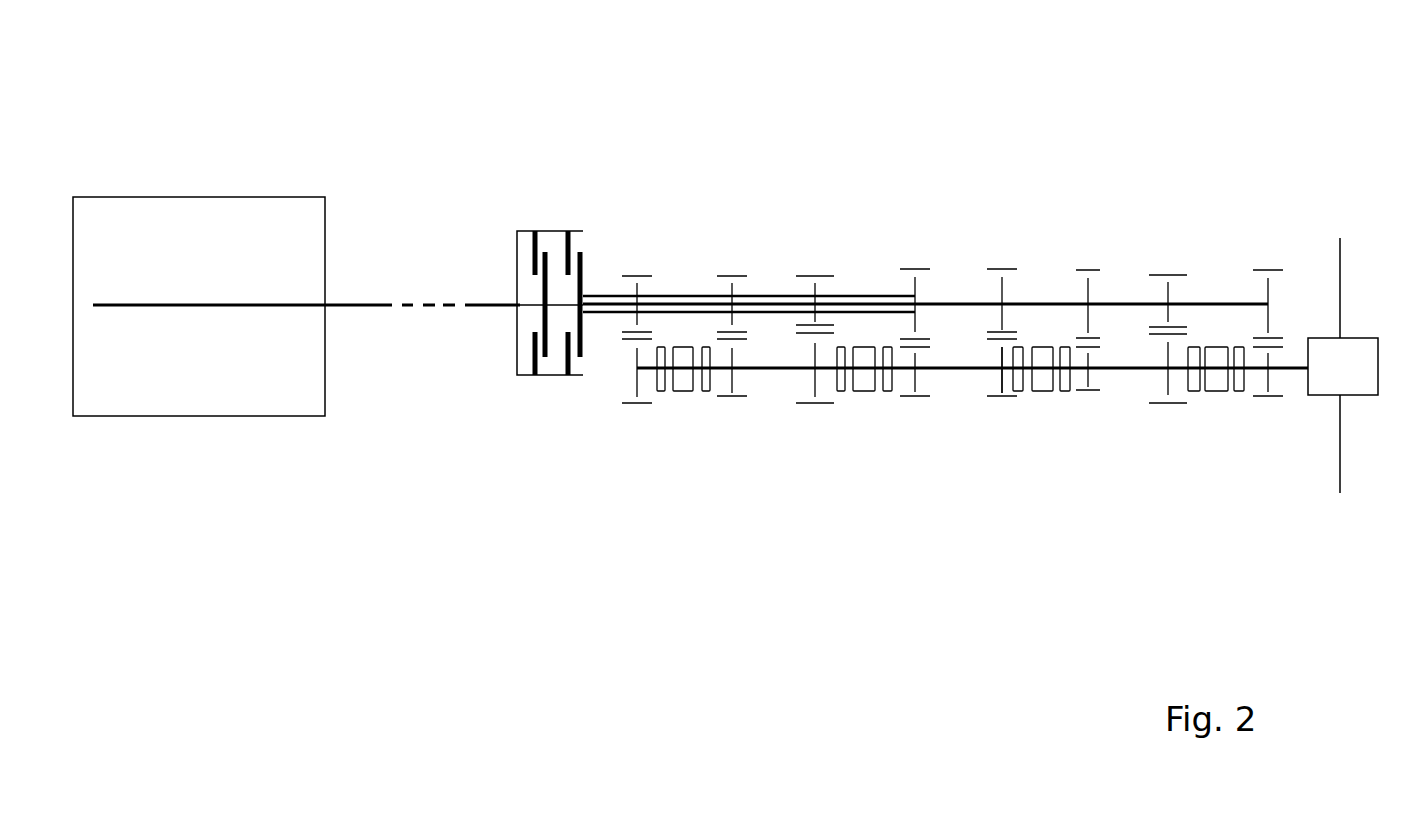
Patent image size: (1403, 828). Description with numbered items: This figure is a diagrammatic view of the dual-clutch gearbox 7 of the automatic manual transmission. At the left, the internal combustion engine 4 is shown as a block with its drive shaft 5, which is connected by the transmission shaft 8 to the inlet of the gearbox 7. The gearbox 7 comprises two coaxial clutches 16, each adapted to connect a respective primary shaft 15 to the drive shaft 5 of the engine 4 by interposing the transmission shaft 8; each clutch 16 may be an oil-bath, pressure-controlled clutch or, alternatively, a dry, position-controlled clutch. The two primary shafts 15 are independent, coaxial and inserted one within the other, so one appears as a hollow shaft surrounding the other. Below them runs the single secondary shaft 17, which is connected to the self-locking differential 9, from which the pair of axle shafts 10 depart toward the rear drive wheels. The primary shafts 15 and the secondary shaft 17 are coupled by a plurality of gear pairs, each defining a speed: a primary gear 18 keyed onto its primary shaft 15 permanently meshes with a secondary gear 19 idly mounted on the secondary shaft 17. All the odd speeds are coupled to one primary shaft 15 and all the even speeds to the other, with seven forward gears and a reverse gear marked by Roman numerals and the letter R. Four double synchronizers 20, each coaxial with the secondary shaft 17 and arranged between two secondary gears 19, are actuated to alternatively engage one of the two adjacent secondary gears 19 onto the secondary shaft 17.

The internal combustion engine 4 is at (160, 233).
The drive shaft 5 is at (248, 306).
The dual-clutch gearbox 7 is at (896, 106).
The transmission shaft 8 is at (470, 302).
The self-locking differential 9 is at (1343, 366).
The axle shafts 10 is at (1340, 240).
The primary shafts 15 is at (601, 297).
The clutches 16 is at (568, 392).
The secondary shaft 17 is at (787, 371).
The primary gear 18 is at (999, 286).
The secondary gear 19 is at (1000, 386).
The double synchronizers 20 is at (686, 392).